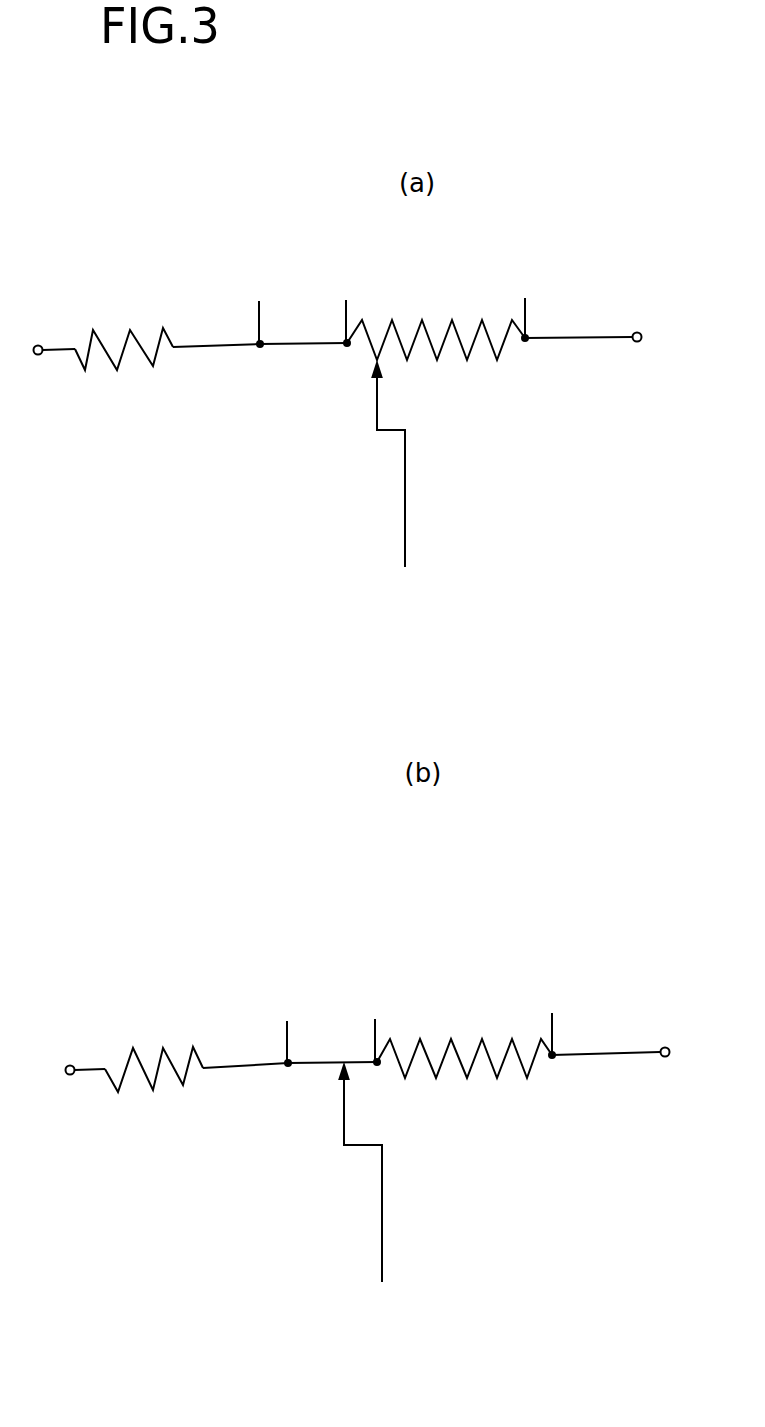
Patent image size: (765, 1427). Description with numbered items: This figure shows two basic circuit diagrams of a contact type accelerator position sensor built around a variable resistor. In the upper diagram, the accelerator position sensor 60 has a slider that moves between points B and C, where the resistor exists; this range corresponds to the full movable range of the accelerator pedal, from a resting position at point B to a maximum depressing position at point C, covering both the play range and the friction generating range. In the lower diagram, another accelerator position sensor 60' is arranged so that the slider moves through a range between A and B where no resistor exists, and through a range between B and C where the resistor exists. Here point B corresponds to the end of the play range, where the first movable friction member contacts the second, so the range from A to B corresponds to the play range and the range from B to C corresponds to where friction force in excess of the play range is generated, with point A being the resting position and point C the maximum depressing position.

The accelerator position sensor 60 is at (338, 419).
The accelerator position sensor 60' is at (368, 1159).